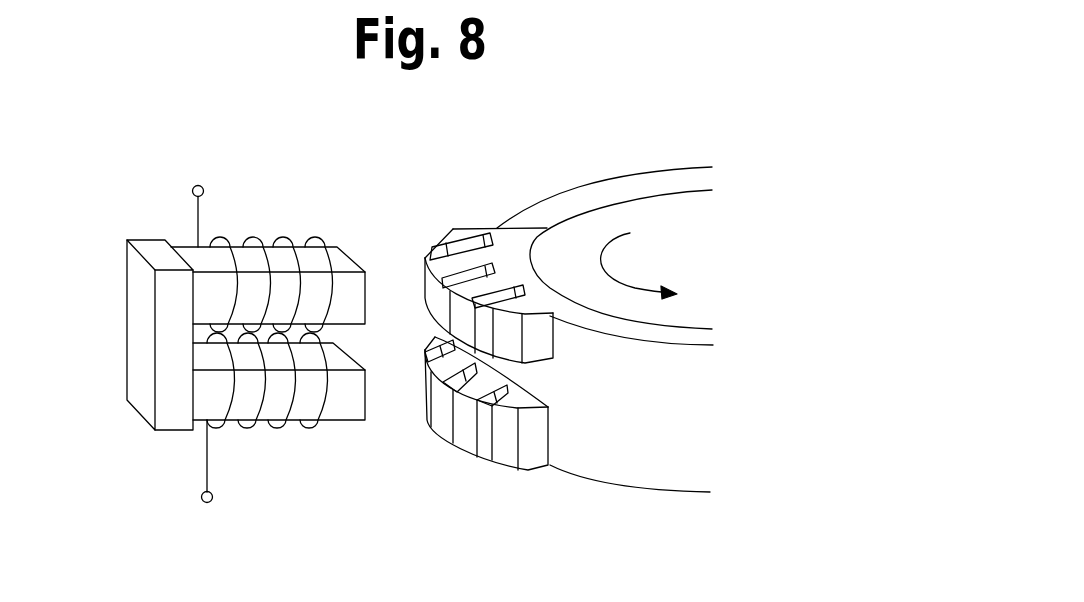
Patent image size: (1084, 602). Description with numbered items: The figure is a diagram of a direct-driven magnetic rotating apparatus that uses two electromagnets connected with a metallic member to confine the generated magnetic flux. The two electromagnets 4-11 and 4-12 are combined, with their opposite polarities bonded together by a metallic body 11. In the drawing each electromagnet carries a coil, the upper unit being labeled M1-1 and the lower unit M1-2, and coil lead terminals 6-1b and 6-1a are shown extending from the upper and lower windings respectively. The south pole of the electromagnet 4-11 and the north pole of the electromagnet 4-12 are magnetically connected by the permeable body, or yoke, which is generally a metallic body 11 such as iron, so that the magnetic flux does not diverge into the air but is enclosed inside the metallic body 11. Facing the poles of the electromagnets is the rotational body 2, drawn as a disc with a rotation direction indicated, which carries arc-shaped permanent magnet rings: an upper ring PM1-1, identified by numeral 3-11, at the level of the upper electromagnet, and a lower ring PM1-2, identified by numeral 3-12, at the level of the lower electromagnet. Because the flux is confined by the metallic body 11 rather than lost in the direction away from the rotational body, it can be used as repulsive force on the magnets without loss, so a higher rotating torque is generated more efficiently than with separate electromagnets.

The rotor disc 2 is at (608, 177).
The metallic body 11 is at (127, 331).
The upper permanent magnet ring PM1-1 3-11 is at (433, 248).
The lower permanent magnet ring PM1-2 3-12 is at (550, 467).
The electromagnet 4-11 is at (346, 250).
The electromagnet 4-12 is at (360, 421).
The coil terminal a 6-1a is at (218, 484).
The coil terminal b 6-1b is at (202, 197).
The upper electromagnet M1-1 is at (269, 239).
The lower electromagnet M1-2 is at (287, 430).
The upper permanent magnet PM1-1 is at (472, 250).
The lower permanent magnet PM1-2 is at (504, 455).